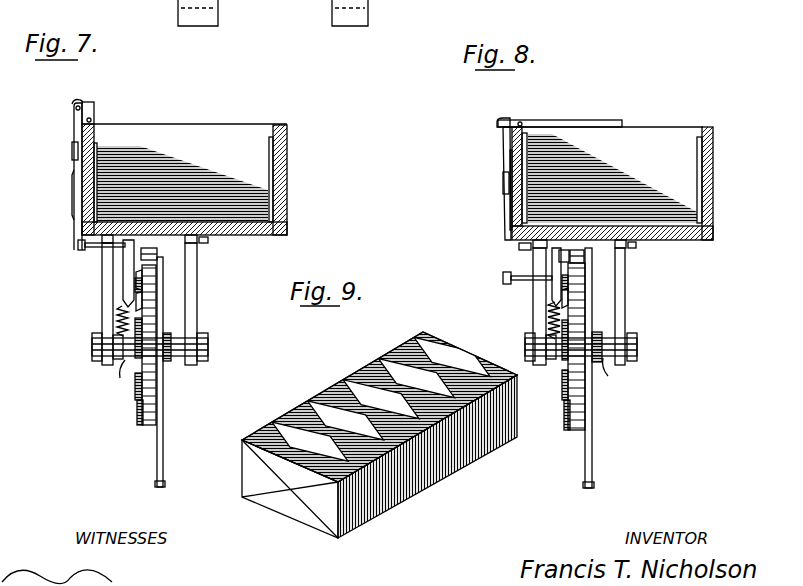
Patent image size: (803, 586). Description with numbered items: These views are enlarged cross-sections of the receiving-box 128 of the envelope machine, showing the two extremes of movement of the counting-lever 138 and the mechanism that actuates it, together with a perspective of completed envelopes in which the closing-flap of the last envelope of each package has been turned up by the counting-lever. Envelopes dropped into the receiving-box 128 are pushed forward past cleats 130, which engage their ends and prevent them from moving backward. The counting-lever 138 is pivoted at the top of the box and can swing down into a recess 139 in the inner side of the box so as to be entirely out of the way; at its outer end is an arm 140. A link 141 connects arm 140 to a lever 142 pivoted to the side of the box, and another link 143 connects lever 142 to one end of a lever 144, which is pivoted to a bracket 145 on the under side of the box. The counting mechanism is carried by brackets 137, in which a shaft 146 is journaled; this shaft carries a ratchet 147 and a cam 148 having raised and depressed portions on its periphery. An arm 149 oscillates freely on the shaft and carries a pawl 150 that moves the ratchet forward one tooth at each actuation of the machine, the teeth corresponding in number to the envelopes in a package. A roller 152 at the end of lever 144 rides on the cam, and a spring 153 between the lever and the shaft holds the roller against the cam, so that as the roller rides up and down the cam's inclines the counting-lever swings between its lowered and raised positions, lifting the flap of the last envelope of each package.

In FIG. 7, the receiving-box 128 is at (182, 181).
In FIG. 8, the receiving-box 128 is at (612, 178).
In FIG. 7, the cleats 130 is at (273, 164).
In FIG. 8, the cleats 130 is at (702, 187).
In FIG. 7, the brackets 137 is at (104, 283).
In FIG. 8, the brackets 137 is at (540, 310).
In FIG. 7, the counting-lever 138 is at (93, 152).
In FIG. 8, the counting-lever 138 is at (588, 120).
In FIG. 7, the recess 139 is at (74, 186).
In FIG. 8, the recess 139 is at (518, 172).
In FIG. 7, the arm 140 is at (76, 103).
In FIG. 8, the arm 140 is at (497, 127).
In FIG. 7, the link 141 is at (74, 133).
In FIG. 8, the link 141 is at (503, 153).
In FIG. 7, the lever 142 is at (72, 155).
In FIG. 8, the lever 142 is at (503, 187).
In FIG. 7, the link 143 is at (82, 222).
In FIG. 8, the link 143 is at (512, 230).
In FIG. 7, the lever 144 is at (130, 258).
In FIG. 8, the lever 144 is at (553, 283).
In FIG. 7, the bracket 145 is at (143, 277).
In FIG. 8, the bracket 145 is at (559, 257).
In FIG. 7, the shaft 146 is at (119, 368).
In FIG. 8, the shaft 146 is at (609, 373).
In FIG. 7, the ratchet 147 is at (140, 407).
In FIG. 8, the ratchet 147 is at (576, 422).
In FIG. 7, the cam 148 is at (150, 378).
In FIG. 8, the cam 148 is at (565, 377).
In FIG. 7, the arm 149 is at (163, 413).
In FIG. 8, the arm 149 is at (592, 420).
In FIG. 7, the pawl 150 is at (152, 256).
In FIG. 8, the pawl 150 is at (580, 262).
In FIG. 7, the roller 152 is at (141, 305).
In FIG. 8, the roller 152 is at (563, 295).
In FIG. 7, the spring 153 is at (117, 312).
In FIG. 8, the spring 153 is at (550, 320).